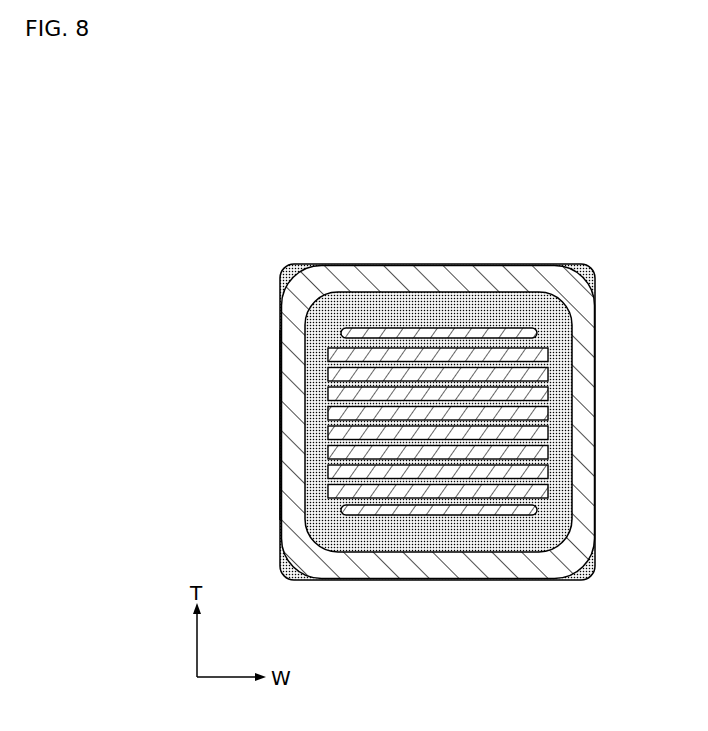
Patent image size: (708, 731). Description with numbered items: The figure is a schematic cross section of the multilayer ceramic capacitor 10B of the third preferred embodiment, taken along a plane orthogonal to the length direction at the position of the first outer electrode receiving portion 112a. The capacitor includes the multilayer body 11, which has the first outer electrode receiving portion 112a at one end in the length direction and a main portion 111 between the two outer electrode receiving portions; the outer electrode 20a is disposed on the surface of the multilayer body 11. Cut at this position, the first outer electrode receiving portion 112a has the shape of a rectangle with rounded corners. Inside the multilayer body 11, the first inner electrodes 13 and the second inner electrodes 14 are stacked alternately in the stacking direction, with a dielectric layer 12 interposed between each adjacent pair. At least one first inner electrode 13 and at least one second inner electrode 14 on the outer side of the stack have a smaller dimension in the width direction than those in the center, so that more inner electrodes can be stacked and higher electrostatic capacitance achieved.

The multilayer ceramic capacitor 10B is at (397, 380).
The multilayer body 11 is at (441, 361).
The main portion 111 is at (575, 262).
The first outer electrode receiving portion 112a is at (603, 193).
The dielectric layer 12 is at (427, 347).
The first inner electrode 13 is at (395, 328).
The second inner electrode 14 is at (458, 515).
The outer electrode 20a is at (292, 423).